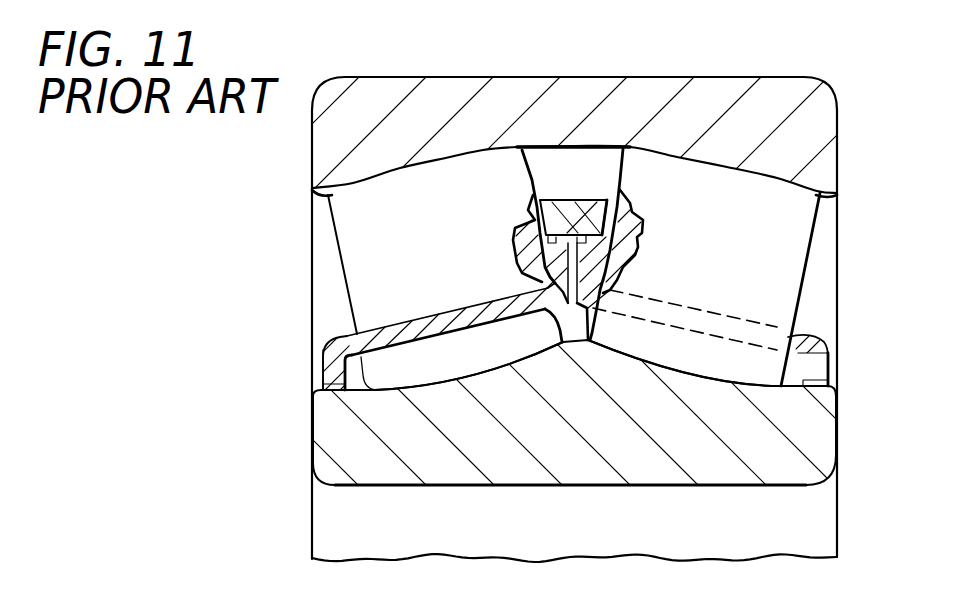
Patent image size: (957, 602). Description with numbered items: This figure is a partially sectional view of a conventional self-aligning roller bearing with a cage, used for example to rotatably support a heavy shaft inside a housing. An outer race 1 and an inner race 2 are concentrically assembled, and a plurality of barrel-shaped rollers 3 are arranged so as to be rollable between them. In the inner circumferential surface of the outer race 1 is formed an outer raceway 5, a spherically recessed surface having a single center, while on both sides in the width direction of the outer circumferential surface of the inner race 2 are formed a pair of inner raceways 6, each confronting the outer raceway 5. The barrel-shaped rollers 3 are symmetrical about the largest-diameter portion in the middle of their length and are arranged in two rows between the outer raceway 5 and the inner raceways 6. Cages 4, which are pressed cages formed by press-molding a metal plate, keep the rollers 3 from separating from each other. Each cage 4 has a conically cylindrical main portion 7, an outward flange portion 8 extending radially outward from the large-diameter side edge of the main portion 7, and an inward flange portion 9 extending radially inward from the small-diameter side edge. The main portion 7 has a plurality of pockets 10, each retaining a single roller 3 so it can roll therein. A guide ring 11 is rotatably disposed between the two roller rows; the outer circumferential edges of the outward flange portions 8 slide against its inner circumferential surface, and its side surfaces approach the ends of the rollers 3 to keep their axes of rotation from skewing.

The outer race 1 is at (694, 95).
The inner race 2 is at (833, 455).
The barrel-shaped rollers 3 is at (355, 228).
The cages 4 is at (335, 338).
The outer raceway 5 is at (735, 157).
The inner raceways 6 is at (427, 380).
The main portion 7 is at (455, 305).
The outward flange portion 8 is at (512, 228).
The inward flange portion 9 is at (330, 362).
The pockets 10 is at (790, 320).
The guide ring 11 is at (568, 210).